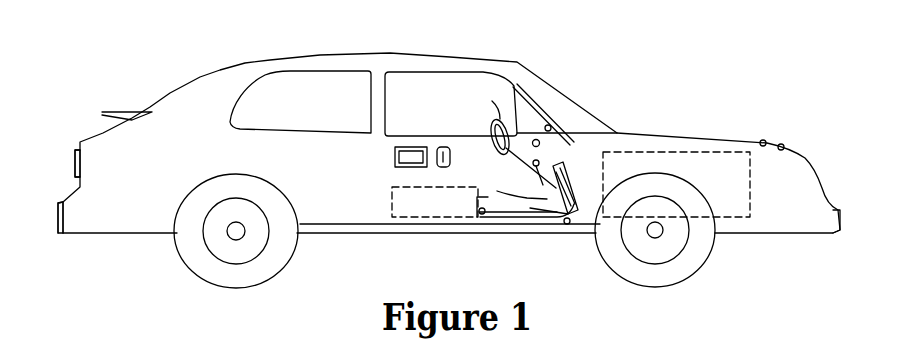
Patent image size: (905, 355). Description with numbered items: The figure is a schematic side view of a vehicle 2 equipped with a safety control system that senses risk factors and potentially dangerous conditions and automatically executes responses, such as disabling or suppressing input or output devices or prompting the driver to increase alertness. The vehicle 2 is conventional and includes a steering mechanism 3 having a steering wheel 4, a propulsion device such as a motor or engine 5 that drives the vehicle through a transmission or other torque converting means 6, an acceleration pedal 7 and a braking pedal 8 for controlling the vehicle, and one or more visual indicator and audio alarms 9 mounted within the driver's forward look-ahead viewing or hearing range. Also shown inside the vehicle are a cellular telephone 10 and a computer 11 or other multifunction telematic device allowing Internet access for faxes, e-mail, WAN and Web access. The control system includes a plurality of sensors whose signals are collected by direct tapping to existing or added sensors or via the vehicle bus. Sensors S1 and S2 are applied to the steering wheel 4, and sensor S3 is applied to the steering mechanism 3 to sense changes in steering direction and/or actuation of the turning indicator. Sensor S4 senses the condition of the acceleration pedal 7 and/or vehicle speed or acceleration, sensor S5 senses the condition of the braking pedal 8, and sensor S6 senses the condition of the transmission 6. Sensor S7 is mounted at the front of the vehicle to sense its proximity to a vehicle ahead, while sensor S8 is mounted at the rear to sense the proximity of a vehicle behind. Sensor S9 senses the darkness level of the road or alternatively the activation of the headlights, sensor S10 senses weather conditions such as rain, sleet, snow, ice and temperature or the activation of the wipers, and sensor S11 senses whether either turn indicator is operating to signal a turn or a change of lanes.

The vehicle 2 is at (550, 62).
The steering mechanism 3 is at (540, 146).
The steering wheel 4 is at (490, 134).
The motor or engine 5 is at (676, 184).
The transmission 6 is at (435, 202).
The acceleration pedal 7 is at (529, 217).
The braking pedal 8 is at (515, 190).
The visual indicator and audio alarms 9 is at (533, 165).
The cellular telephone 10 is at (436, 147).
The computer 11 is at (396, 154).
The sensor S1 is at (486, 100).
The sensor S2 is at (516, 90).
The sensor S3 is at (548, 125).
The sensor S4 is at (567, 224).
The sensor S5 is at (560, 164).
The sensor S6 is at (483, 214).
The sensor S7 is at (833, 228).
The sensor S8 is at (58, 220).
The sensor S9 is at (760, 142).
The sensor S10 is at (781, 144).
The sensor S11 is at (75, 153).